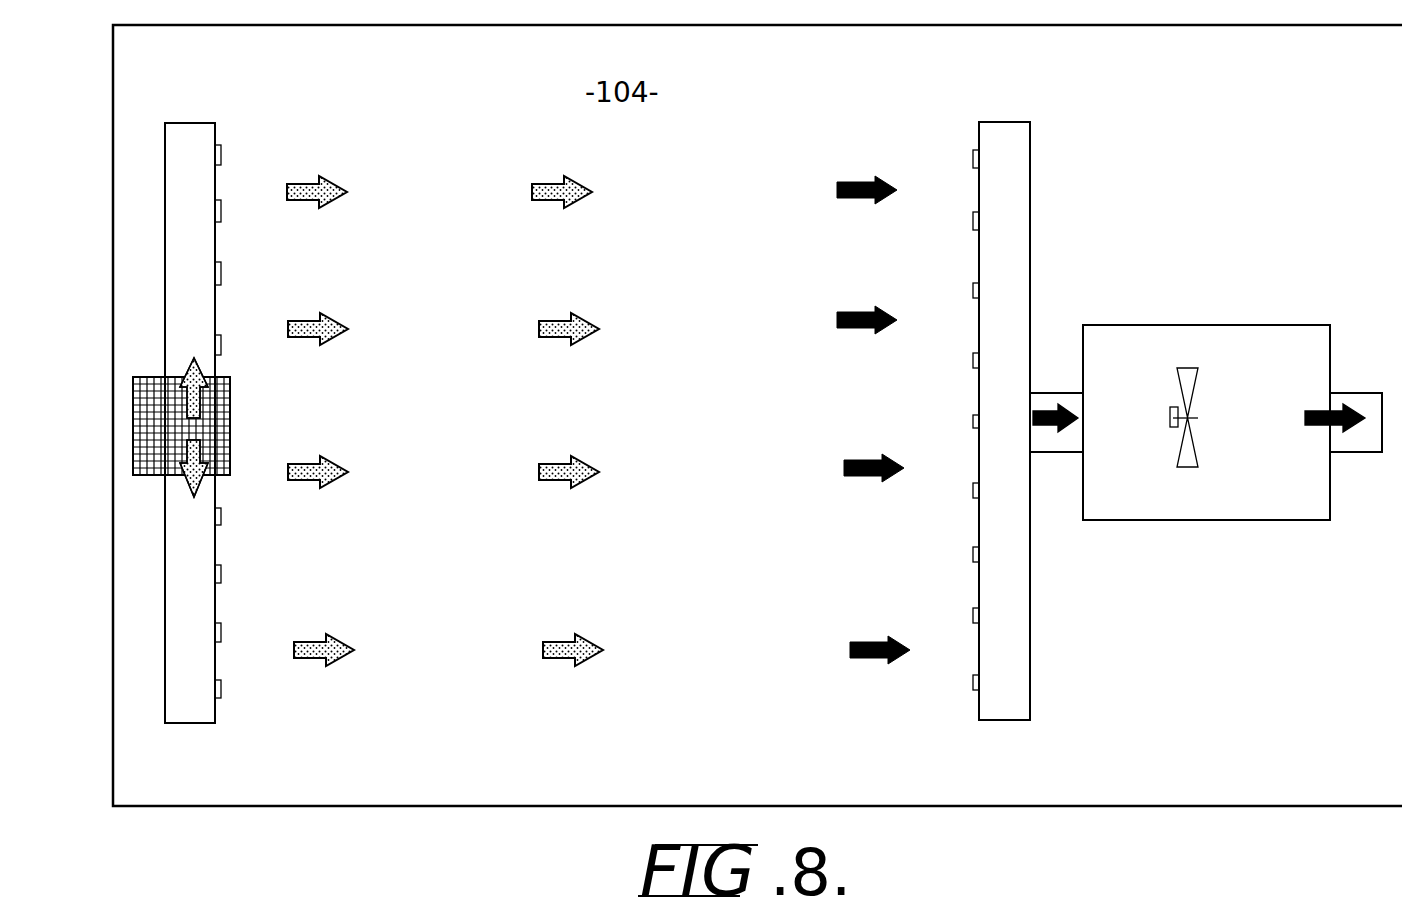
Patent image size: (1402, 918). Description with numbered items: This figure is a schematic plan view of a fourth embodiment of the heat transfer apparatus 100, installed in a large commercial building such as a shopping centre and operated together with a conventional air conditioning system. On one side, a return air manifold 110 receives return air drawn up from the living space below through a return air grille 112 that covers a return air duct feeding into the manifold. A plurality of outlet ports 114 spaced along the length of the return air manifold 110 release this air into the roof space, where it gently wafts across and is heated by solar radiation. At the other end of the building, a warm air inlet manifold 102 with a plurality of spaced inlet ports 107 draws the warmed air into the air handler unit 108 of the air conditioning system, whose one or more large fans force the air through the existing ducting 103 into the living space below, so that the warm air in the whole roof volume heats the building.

The heat transfer apparatus 100 is at (1238, 117).
The warm air inlet manifold 102 is at (1033, 592).
The ducting 103 is at (1361, 453).
The inlet ports 107 is at (973, 213).
The air handler unit 108 is at (1195, 325).
The return air manifold 110 is at (215, 186).
The return air grille 112 is at (232, 420).
The outlet ports 114 is at (222, 210).